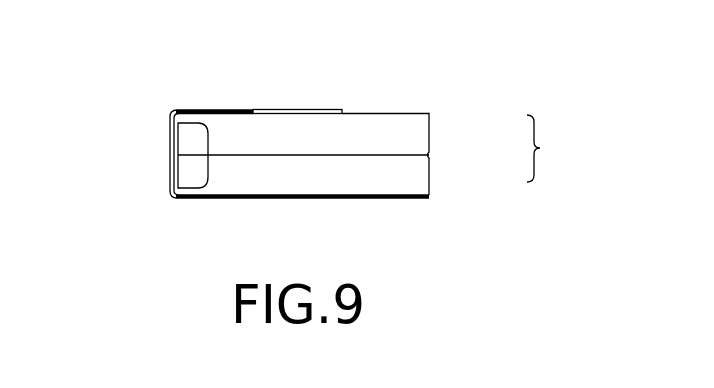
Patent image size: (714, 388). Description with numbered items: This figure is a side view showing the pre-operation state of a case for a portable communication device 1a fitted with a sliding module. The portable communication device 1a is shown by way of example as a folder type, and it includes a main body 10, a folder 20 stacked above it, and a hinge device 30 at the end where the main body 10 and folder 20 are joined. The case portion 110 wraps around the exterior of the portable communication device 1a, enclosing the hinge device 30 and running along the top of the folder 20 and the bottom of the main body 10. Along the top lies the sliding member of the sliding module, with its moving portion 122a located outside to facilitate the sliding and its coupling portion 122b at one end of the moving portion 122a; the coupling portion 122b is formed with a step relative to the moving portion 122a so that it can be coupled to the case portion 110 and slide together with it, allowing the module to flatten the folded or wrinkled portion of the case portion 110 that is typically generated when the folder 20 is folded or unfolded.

The case portion 110 is at (173, 126).
The coupling portion 122b is at (223, 114).
The moving portion 122a is at (307, 109).
The folder 20 is at (421, 138).
The main body 10 is at (421, 180).
The hinge device 30 is at (190, 172).
The portable communication device 1a is at (547, 148).